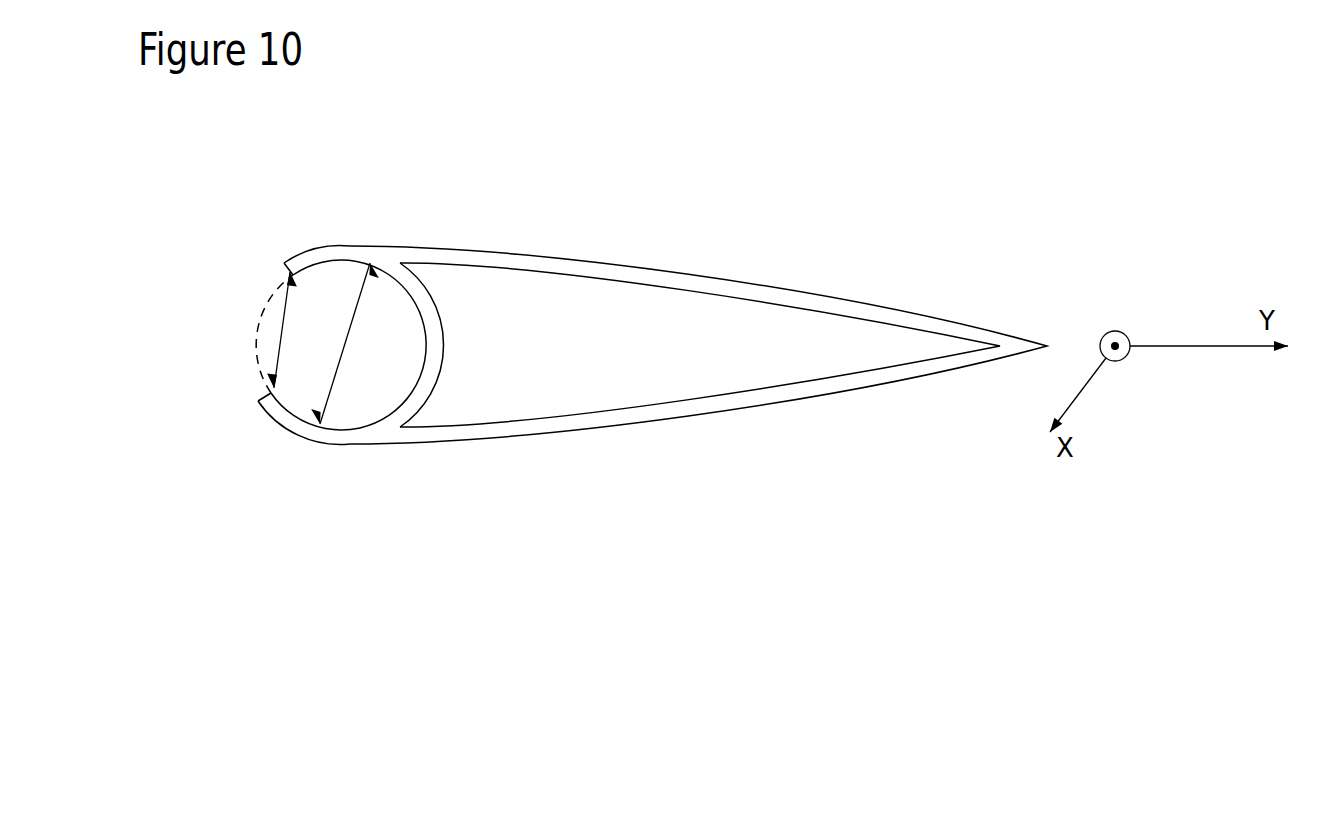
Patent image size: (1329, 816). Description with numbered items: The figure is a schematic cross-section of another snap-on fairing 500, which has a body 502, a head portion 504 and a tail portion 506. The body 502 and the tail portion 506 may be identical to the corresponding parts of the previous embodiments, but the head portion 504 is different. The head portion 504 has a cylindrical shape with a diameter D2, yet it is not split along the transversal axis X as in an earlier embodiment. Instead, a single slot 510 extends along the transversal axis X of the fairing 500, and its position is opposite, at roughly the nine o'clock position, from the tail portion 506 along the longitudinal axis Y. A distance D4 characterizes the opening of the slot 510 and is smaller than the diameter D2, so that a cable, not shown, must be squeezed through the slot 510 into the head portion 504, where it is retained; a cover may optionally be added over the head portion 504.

The fairing 500 is at (633, 68).
The body 502 is at (623, 262).
The head portion 504 is at (342, 246).
The tail portion 506 is at (948, 318).
The slot 510 is at (252, 352).
The distance characterizing the opening of the slot D4 is at (282, 332).
The diameter of the head portion D2 is at (350, 337).